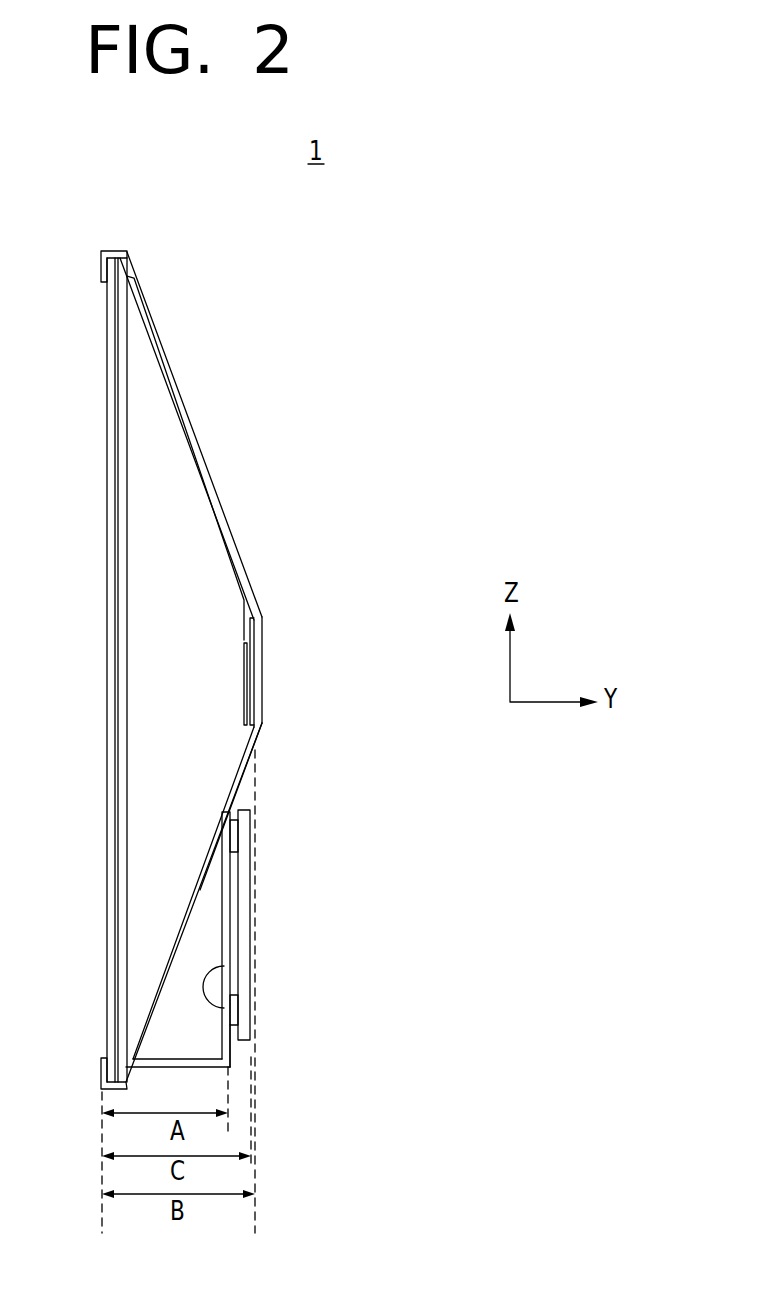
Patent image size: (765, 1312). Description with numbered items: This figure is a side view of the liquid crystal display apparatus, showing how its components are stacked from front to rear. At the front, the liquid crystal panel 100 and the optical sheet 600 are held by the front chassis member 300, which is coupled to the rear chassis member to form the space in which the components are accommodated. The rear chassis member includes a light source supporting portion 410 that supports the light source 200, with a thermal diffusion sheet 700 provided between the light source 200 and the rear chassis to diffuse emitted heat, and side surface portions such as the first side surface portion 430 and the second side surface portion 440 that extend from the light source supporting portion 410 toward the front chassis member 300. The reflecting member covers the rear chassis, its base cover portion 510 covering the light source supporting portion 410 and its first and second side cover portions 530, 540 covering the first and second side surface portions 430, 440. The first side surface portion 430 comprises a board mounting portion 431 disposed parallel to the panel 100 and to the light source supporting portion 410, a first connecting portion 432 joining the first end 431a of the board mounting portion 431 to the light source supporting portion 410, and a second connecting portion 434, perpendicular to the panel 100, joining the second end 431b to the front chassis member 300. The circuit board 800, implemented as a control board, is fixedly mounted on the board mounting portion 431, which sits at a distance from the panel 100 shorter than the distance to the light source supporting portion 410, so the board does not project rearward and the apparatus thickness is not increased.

The liquid crystal panel 100 is at (107, 347).
The light source 200 is at (222, 666).
The front chassis member 300 is at (107, 251).
The light source supporting portion 410 is at (262, 663).
The first side surface portion 430 is at (304, 911).
The board mounting portion 431 is at (213, 1013).
The first end of the board mounting portion 431a is at (238, 833).
The second end of the board mounting portion 431b is at (228, 1054).
The first connecting portion 432 is at (240, 778).
The second connecting portion 434 is at (255, 1079).
The second side surface portion 440 is at (147, 302).
The base cover portion 510 is at (244, 717).
The first side cover portion 530 is at (220, 792).
The second side cover portion 540 is at (232, 567).
The optical sheet 600 is at (120, 480).
The thermal diffusion sheet 700 is at (253, 700).
The circuit board 800 is at (246, 918).